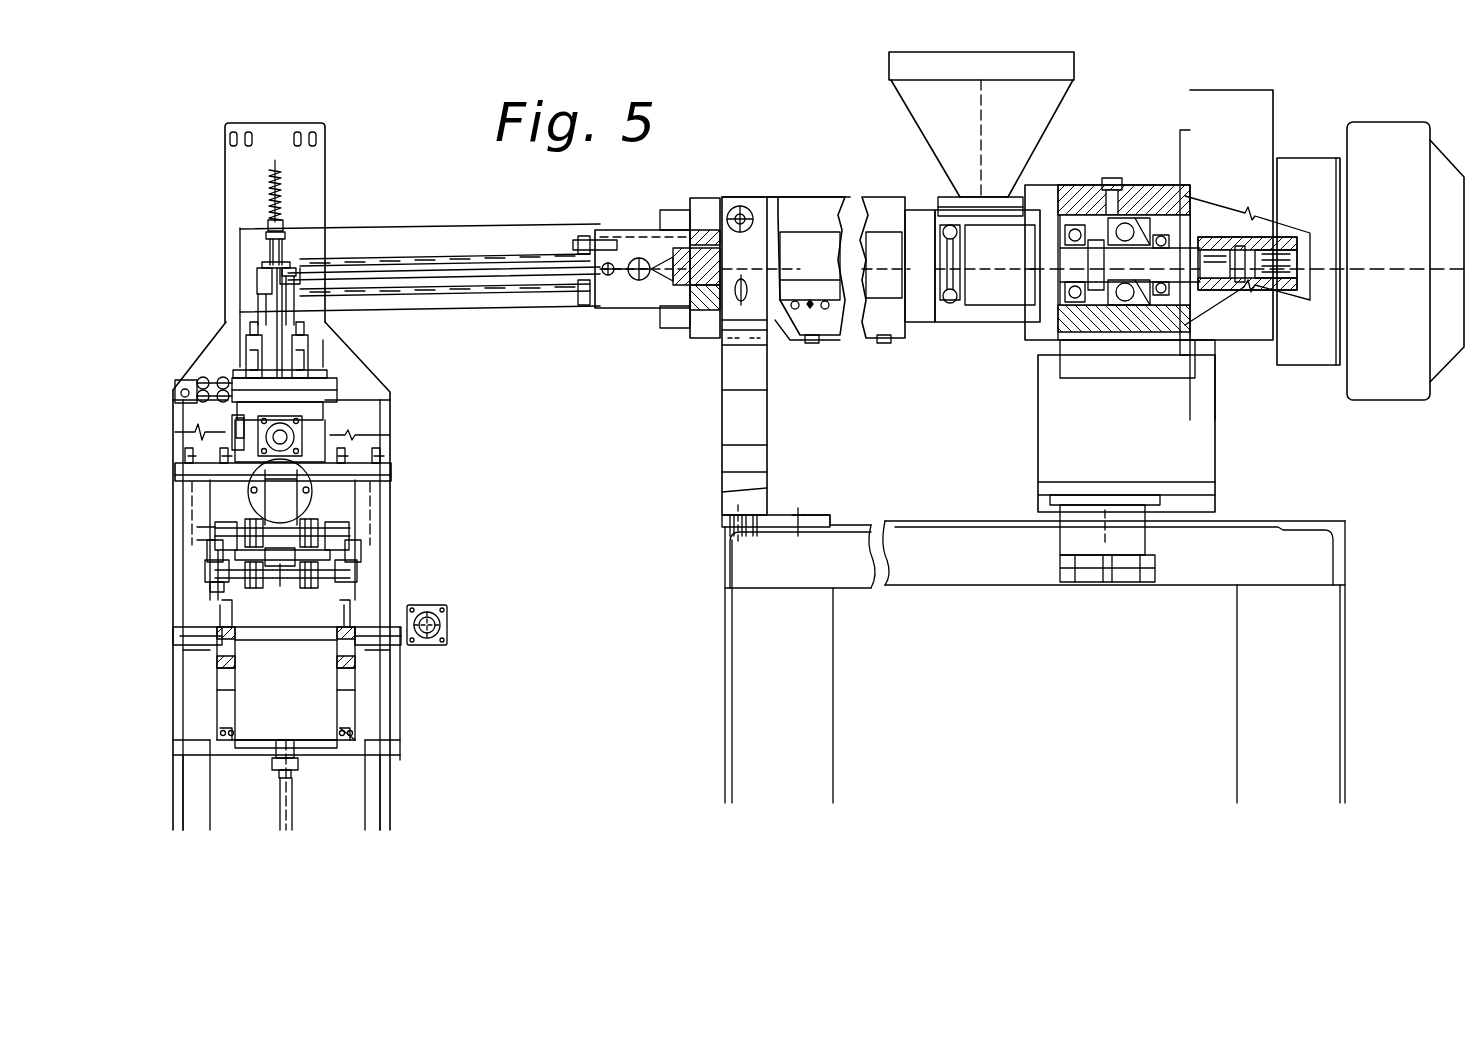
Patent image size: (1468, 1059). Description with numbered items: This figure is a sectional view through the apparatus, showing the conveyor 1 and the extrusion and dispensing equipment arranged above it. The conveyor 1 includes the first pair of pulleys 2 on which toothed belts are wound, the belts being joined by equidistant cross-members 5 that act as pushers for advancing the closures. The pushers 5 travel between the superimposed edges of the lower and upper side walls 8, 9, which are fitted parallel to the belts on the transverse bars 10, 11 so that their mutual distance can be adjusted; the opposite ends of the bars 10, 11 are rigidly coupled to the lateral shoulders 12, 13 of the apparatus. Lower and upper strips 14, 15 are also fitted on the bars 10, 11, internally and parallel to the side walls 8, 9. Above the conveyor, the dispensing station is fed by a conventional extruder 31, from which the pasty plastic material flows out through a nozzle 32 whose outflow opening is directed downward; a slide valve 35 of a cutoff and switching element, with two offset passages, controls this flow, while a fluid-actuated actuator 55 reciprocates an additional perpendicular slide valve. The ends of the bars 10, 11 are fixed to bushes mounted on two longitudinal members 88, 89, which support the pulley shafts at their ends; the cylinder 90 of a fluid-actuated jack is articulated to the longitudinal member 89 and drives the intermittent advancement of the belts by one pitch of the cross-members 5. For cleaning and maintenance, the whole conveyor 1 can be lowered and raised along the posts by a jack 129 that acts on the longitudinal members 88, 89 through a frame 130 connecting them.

The conveyor 1 is at (352, 738).
The first pair of pulleys 2 is at (340, 696).
The cross-members 5 is at (258, 750).
The lower side wall 8 is at (245, 590).
The upper side wall 9 is at (235, 535).
The transverse bar 10 is at (310, 508).
The transverse bar 11 is at (340, 582).
The lateral shoulder 12 is at (178, 540).
The lateral shoulder 13 is at (390, 522).
The lower strip 14 is at (350, 582).
The upper strip 15 is at (368, 505).
The extruder 31 is at (842, 166).
The nozzle 32 is at (286, 295).
The slide valve 35 is at (318, 372).
The fluid-actuated actuator 55 is at (310, 431).
The longitudinal member 88 is at (200, 632).
The longitudinal member 89 is at (380, 632).
The cylinder of fluid-actuated jack 90 is at (447, 620).
The jack 129 is at (290, 812).
The frame 130 is at (400, 722).